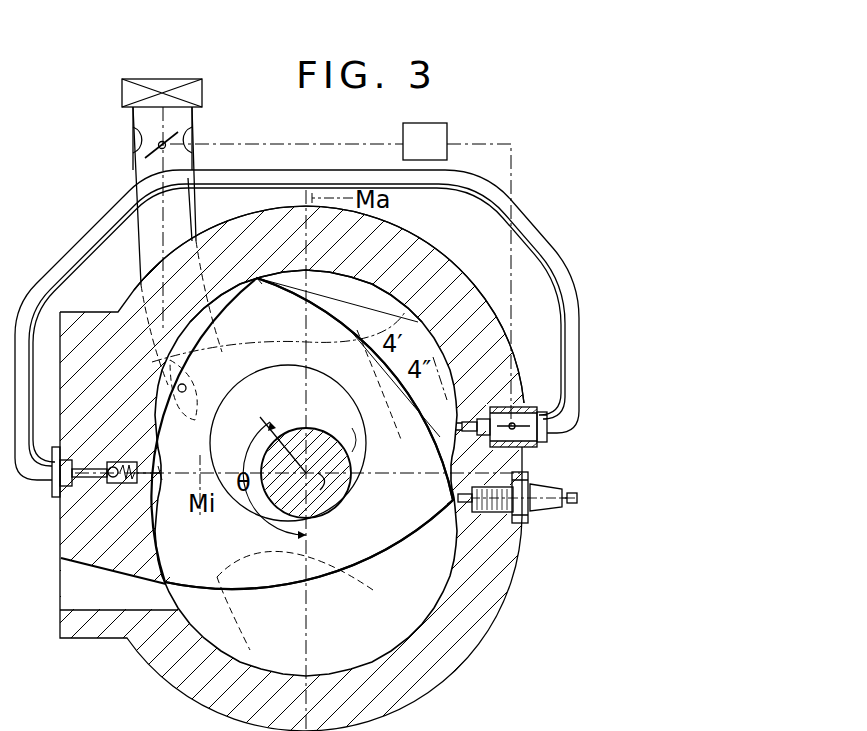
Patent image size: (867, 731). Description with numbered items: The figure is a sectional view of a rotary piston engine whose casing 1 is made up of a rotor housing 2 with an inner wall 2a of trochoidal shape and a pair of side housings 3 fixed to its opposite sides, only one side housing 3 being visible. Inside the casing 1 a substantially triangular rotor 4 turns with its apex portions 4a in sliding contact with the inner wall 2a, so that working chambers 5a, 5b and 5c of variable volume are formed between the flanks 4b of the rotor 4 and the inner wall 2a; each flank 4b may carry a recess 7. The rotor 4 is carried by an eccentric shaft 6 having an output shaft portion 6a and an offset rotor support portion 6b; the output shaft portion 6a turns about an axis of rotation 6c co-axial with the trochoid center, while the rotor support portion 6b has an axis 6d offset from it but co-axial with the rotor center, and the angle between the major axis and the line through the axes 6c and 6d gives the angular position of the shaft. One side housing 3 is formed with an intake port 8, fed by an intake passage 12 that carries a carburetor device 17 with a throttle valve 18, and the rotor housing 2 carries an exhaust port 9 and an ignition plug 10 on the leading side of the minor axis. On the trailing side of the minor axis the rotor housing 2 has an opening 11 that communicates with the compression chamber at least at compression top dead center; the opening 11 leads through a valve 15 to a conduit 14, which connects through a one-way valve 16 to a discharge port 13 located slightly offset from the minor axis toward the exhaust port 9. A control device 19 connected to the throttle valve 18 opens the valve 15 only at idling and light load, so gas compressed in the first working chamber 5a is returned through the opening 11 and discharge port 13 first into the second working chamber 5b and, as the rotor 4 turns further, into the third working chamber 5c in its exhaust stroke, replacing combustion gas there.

The casing 1 is at (427, 240).
The rotor housing 2 is at (461, 290).
The inner wall 2a is at (436, 262).
The side housing 3 is at (356, 287).
The rotor 4 is at (275, 313).
The apex portions 4a is at (257, 278).
The flanks 4b is at (325, 316).
The first working chamber 5a is at (375, 311).
The second working chamber 5b is at (188, 338).
The third working chamber 5c is at (366, 656).
The eccentric shaft 6 is at (286, 408).
The output shaft portion 6a is at (343, 492).
The rotor support portion 6b is at (356, 440).
The axis of rotation 6c is at (320, 490).
The axis 6d is at (283, 449).
The recess 7 is at (260, 580).
The intake port 8 is at (167, 383).
The exhaust port 9 is at (80, 592).
The ignition plug 10 is at (547, 493).
The opening 11 is at (480, 405).
The intake passage 12 is at (140, 243).
The discharge port 13 is at (162, 473).
The conduit 14 is at (97, 225).
The valve 15 is at (523, 417).
The one-way valve 16 is at (110, 478).
The carburetor device 17 is at (132, 148).
The throttle valve 18 is at (178, 133).
The control device 19 is at (445, 133).